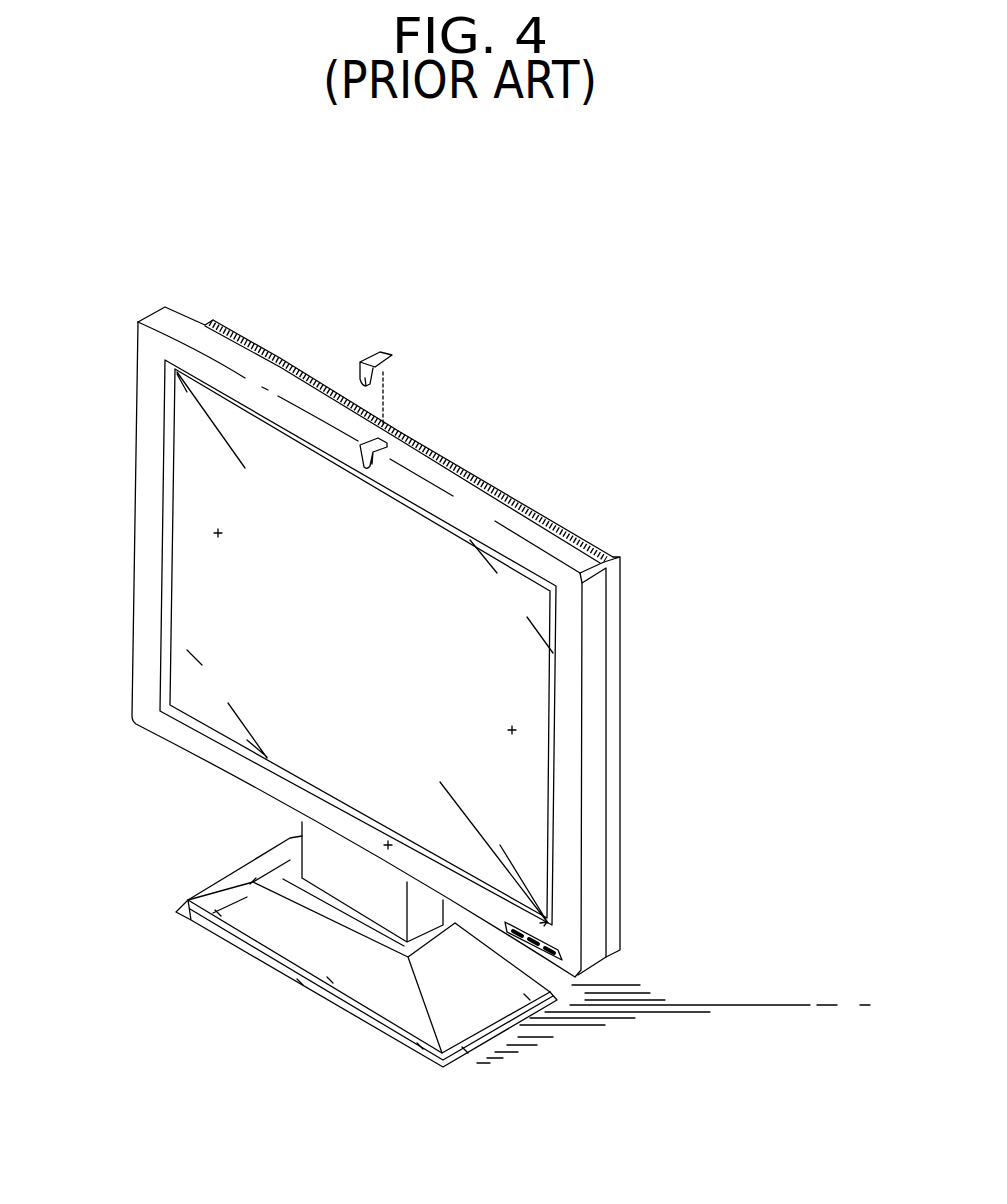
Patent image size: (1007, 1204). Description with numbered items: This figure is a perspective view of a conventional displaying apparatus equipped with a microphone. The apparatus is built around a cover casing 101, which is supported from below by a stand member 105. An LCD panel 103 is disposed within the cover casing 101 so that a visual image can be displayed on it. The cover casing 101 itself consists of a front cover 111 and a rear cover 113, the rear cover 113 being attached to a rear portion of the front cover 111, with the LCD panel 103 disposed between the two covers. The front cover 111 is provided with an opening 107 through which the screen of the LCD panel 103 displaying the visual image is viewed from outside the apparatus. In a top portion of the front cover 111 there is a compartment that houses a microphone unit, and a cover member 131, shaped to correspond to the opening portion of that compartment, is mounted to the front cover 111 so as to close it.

The cover casing 101 is at (341, 642).
The LCD panel 103 is at (386, 647).
The stand member 105 is at (330, 980).
The opening 107 is at (171, 478).
The front cover 111 is at (434, 476).
The rear cover 113 is at (551, 517).
The cover member 131 is at (403, 344).